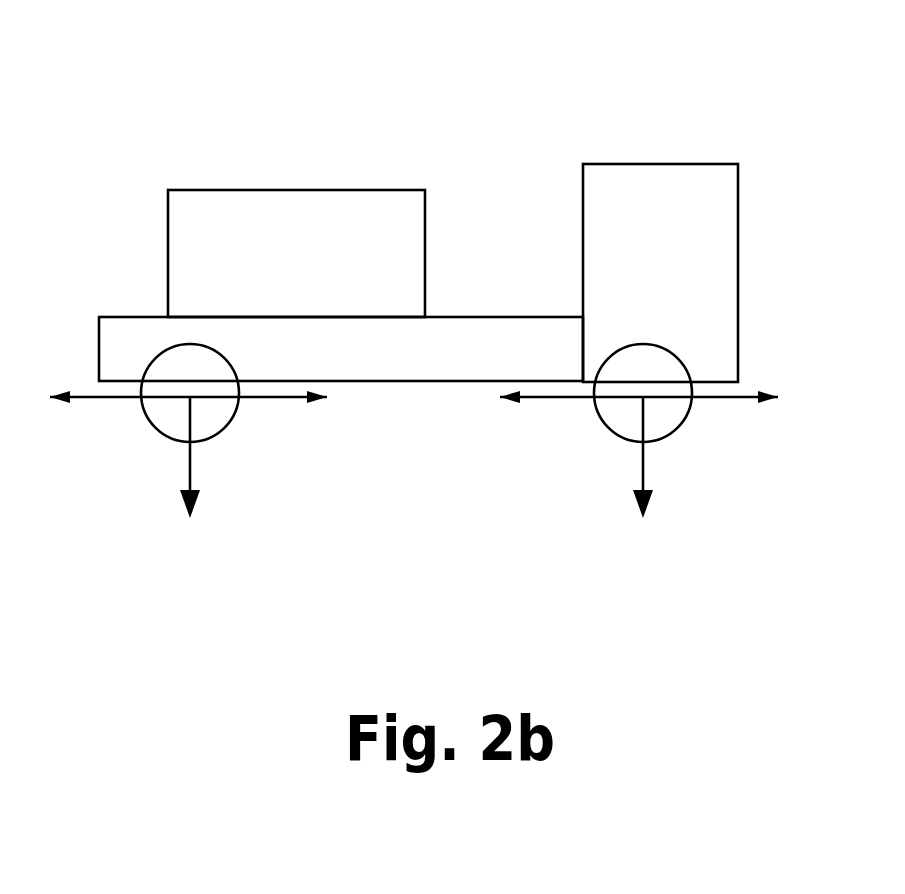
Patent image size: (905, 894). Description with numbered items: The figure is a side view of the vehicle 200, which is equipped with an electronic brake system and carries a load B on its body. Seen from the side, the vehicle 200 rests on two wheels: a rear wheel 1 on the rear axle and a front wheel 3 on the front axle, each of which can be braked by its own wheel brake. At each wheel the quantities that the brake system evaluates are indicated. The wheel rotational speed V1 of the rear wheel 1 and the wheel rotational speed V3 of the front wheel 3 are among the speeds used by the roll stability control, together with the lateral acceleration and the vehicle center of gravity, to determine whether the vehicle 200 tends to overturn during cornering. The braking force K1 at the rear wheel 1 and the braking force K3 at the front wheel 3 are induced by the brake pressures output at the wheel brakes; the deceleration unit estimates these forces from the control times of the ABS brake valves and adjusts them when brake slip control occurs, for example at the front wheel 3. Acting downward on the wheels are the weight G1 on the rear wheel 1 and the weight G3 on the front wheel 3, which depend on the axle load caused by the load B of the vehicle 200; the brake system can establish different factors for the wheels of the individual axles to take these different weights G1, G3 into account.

The vehicle 200 is at (424, 323).
The load B is at (297, 190).
The rear wheel 1 is at (155, 420).
The front wheel 3 is at (610, 430).
The braking force K1 is at (118, 398).
The wheel rotational speed V1 is at (258, 400).
The weight G1 is at (192, 460).
The braking force K3 is at (572, 398).
The wheel rotational speed V3 is at (710, 400).
The weight G3 is at (645, 459).